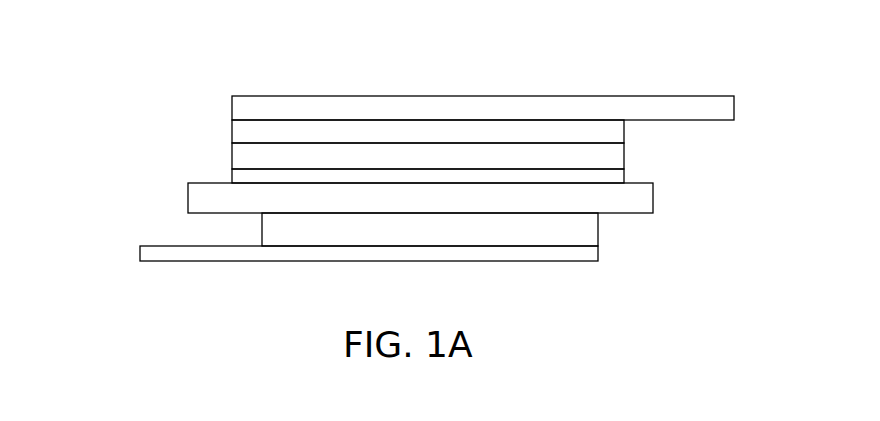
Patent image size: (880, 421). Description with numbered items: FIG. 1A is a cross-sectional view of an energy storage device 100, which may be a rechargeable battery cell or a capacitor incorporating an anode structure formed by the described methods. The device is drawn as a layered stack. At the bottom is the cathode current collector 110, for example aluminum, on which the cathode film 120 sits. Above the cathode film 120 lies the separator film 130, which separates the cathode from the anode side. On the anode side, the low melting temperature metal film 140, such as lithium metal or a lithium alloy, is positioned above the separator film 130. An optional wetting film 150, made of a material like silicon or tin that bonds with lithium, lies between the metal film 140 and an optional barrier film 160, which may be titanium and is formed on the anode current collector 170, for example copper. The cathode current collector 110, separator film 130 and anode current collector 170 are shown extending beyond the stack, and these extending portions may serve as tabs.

The energy storage device 100 is at (162, 60).
The cathode current collector 110 is at (140, 252).
The cathode film 120 is at (598, 227).
The separator film 130 is at (188, 187).
The low melting temperature metal film 140 is at (624, 176).
The wetting film 150 is at (232, 156).
The barrier film 160 is at (624, 129).
The anode current collector 170 is at (232, 103).